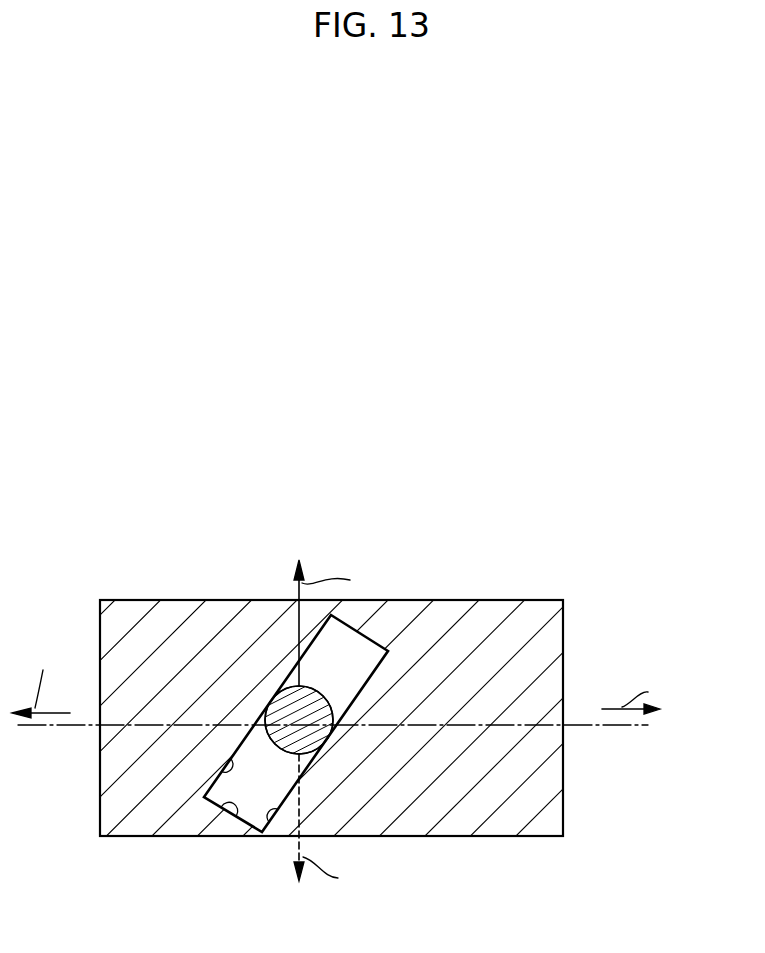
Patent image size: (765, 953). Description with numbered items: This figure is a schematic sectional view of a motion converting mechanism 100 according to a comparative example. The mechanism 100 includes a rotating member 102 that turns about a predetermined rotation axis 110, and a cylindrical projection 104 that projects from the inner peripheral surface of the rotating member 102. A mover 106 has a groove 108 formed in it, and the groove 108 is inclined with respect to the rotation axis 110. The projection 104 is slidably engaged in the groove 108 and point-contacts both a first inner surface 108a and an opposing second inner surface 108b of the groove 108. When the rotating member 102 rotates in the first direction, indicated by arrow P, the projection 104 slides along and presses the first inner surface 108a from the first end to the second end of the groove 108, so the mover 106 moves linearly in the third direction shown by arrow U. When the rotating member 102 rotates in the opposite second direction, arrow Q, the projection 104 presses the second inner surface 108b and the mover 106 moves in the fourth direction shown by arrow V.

The motion converting mechanism 100 is at (517, 553).
The rotating member 102 is at (326, 690).
The projection 104 is at (340, 683).
The mover 106 is at (460, 813).
The groove 108 is at (225, 813).
The first inner surface 108a is at (226, 773).
The second inner surface 108b is at (271, 821).
The predetermined rotation axis 110 is at (635, 727).